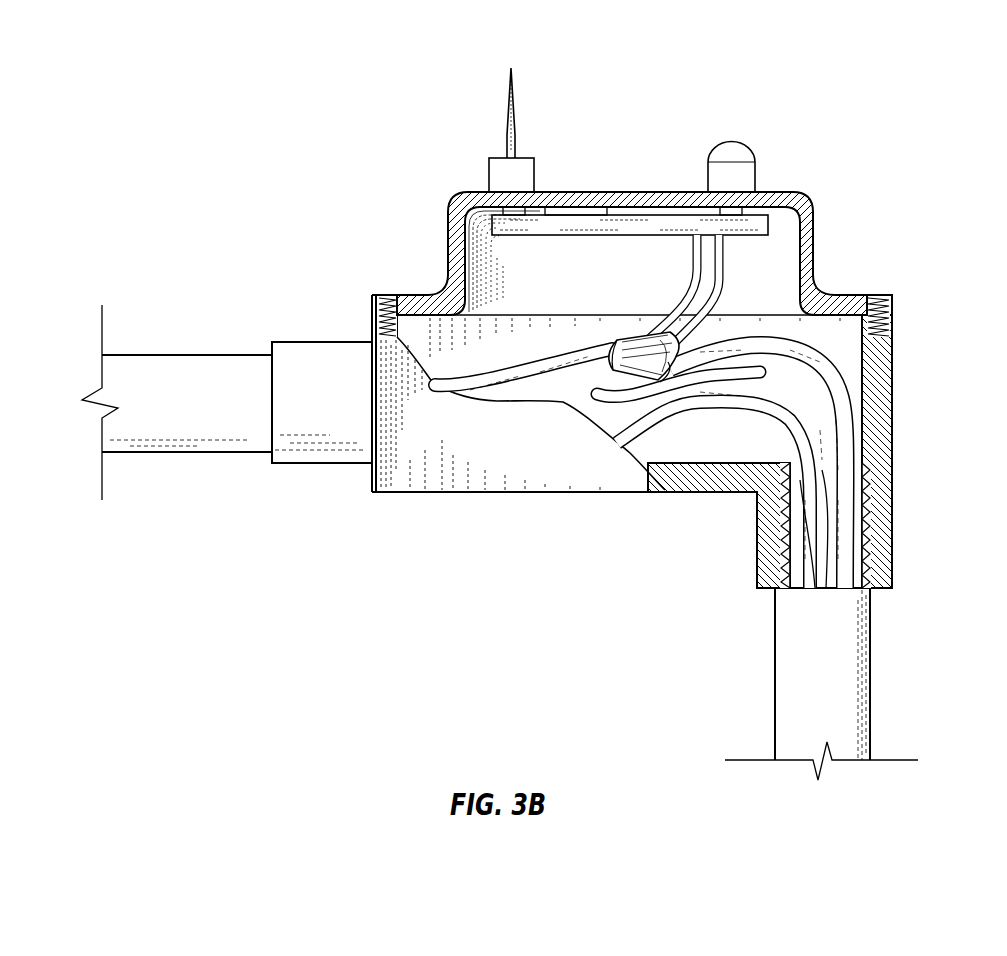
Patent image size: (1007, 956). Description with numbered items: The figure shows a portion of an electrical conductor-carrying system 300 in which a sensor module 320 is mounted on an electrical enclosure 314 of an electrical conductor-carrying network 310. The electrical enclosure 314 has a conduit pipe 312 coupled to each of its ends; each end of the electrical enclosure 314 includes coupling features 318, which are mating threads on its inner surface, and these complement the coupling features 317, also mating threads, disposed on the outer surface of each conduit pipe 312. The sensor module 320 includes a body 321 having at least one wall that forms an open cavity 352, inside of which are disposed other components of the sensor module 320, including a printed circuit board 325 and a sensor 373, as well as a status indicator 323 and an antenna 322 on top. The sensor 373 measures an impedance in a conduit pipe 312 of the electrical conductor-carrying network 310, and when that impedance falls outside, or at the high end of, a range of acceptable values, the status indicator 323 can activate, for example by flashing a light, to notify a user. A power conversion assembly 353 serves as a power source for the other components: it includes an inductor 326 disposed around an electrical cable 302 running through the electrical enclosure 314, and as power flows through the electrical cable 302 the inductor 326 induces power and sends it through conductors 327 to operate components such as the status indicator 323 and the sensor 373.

The electrical conductor-carrying system 300 is at (158, 86).
The electrical cable 302 is at (843, 423).
The electrical conductor-carrying network 310 is at (622, 460).
The conduit pipe 312 is at (180, 363).
The electrical enclosure 314 is at (897, 437).
The coupling features 317 is at (863, 555).
The coupling features 318 is at (867, 493).
The sensor module 320 is at (623, 191).
The body 321 is at (448, 213).
The antenna 322 is at (525, 102).
The status indicator 323 is at (762, 173).
The printed circuit board 325 is at (777, 222).
The inductor 326 is at (689, 353).
The conductors 327 is at (717, 275).
The cavity 352 is at (492, 280).
The power conversion assembly 353 is at (662, 297).
The sensor 373 is at (585, 205).